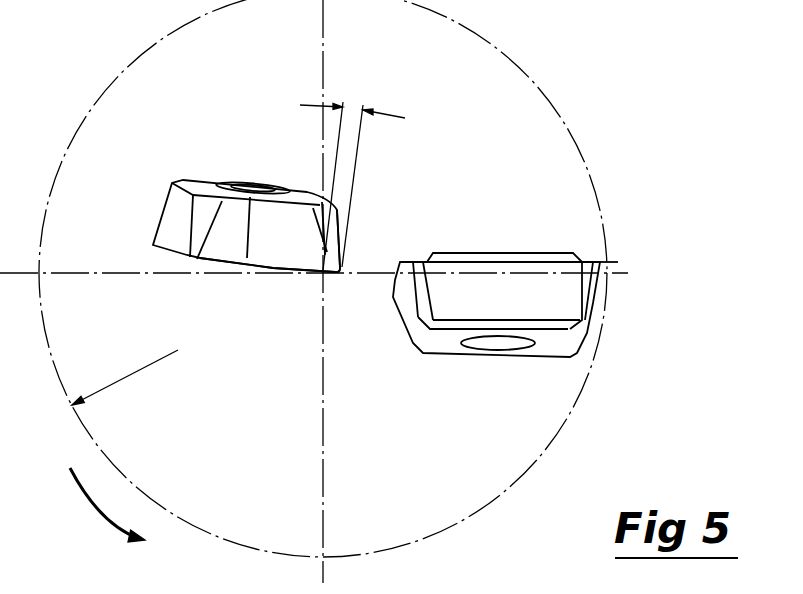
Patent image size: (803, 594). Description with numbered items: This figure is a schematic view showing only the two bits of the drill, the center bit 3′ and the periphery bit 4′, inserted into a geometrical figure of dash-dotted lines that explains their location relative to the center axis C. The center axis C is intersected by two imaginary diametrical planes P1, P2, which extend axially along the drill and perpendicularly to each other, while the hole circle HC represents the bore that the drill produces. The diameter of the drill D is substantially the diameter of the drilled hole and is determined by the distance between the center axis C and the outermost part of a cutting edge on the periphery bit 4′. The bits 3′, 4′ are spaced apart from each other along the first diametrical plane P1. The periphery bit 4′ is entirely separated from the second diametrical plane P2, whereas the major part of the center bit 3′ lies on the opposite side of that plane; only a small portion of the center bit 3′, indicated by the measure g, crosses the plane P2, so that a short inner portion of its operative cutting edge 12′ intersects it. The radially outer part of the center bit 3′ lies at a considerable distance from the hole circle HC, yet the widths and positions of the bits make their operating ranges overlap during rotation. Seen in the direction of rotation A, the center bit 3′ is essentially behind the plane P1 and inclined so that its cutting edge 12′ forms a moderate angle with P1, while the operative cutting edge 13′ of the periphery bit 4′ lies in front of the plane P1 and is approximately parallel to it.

The center bit 3′ is at (207, 177).
The periphery bit 4′ is at (545, 242).
The operative cutting edge of the center bit 12′ is at (272, 268).
The operative cutting edge of the periphery bit 13′ is at (485, 260).
The hole circle HC is at (75, 138).
The first diametrical plane P1 is at (108, 273).
The second diametrical plane P2 is at (323, 478).
The center axis C is at (325, 278).
The diameter of the drill D is at (125, 377).
The measure g is at (352, 178).
The direction of rotation A is at (107, 505).